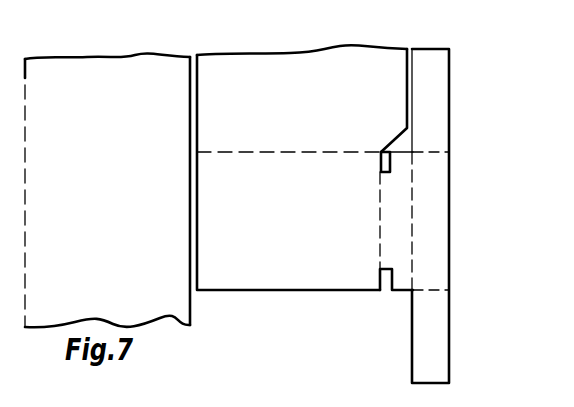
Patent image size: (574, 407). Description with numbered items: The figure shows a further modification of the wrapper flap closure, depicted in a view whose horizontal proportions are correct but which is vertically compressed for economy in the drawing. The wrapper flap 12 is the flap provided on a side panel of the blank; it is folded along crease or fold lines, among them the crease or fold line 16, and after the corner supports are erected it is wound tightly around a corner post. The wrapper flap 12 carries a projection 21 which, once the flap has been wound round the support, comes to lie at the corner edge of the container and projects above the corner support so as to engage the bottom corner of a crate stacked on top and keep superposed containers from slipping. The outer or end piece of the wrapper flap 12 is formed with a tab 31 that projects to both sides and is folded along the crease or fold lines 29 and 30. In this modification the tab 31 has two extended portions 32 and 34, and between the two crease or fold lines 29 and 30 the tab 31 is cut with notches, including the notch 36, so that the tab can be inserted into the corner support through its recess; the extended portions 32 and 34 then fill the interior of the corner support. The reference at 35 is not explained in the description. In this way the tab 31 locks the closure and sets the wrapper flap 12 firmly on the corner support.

The wrapper flap 12 is at (383, 63).
The crease or fold line 16 is at (323, 150).
The projection 21 is at (409, 88).
The crease or fold line 29 is at (413, 183).
The crease or fold line 30 is at (380, 220).
The tab 31 is at (430, 225).
The extended portion 32 is at (441, 58).
The extended portion 34 is at (438, 335).
The seal 35 is at (388, 165).
The notch 36 is at (388, 277).